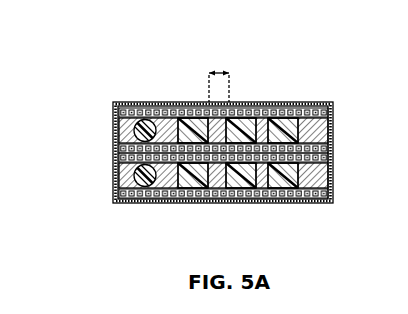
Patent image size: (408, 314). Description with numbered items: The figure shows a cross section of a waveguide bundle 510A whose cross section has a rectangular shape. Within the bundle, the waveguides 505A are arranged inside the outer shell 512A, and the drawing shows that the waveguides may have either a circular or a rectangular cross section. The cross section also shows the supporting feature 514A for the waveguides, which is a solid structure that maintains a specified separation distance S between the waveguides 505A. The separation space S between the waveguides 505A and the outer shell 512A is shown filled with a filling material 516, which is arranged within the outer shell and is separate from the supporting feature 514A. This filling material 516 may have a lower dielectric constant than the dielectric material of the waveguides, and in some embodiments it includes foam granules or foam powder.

The waveguide bundle 510A is at (112, 27).
The outer shell 512A is at (165, 102).
The waveguides 505A is at (300, 108).
The supporting feature 514A is at (168, 183).
The filling material 516 is at (225, 195).
The separation distance s is at (221, 71).